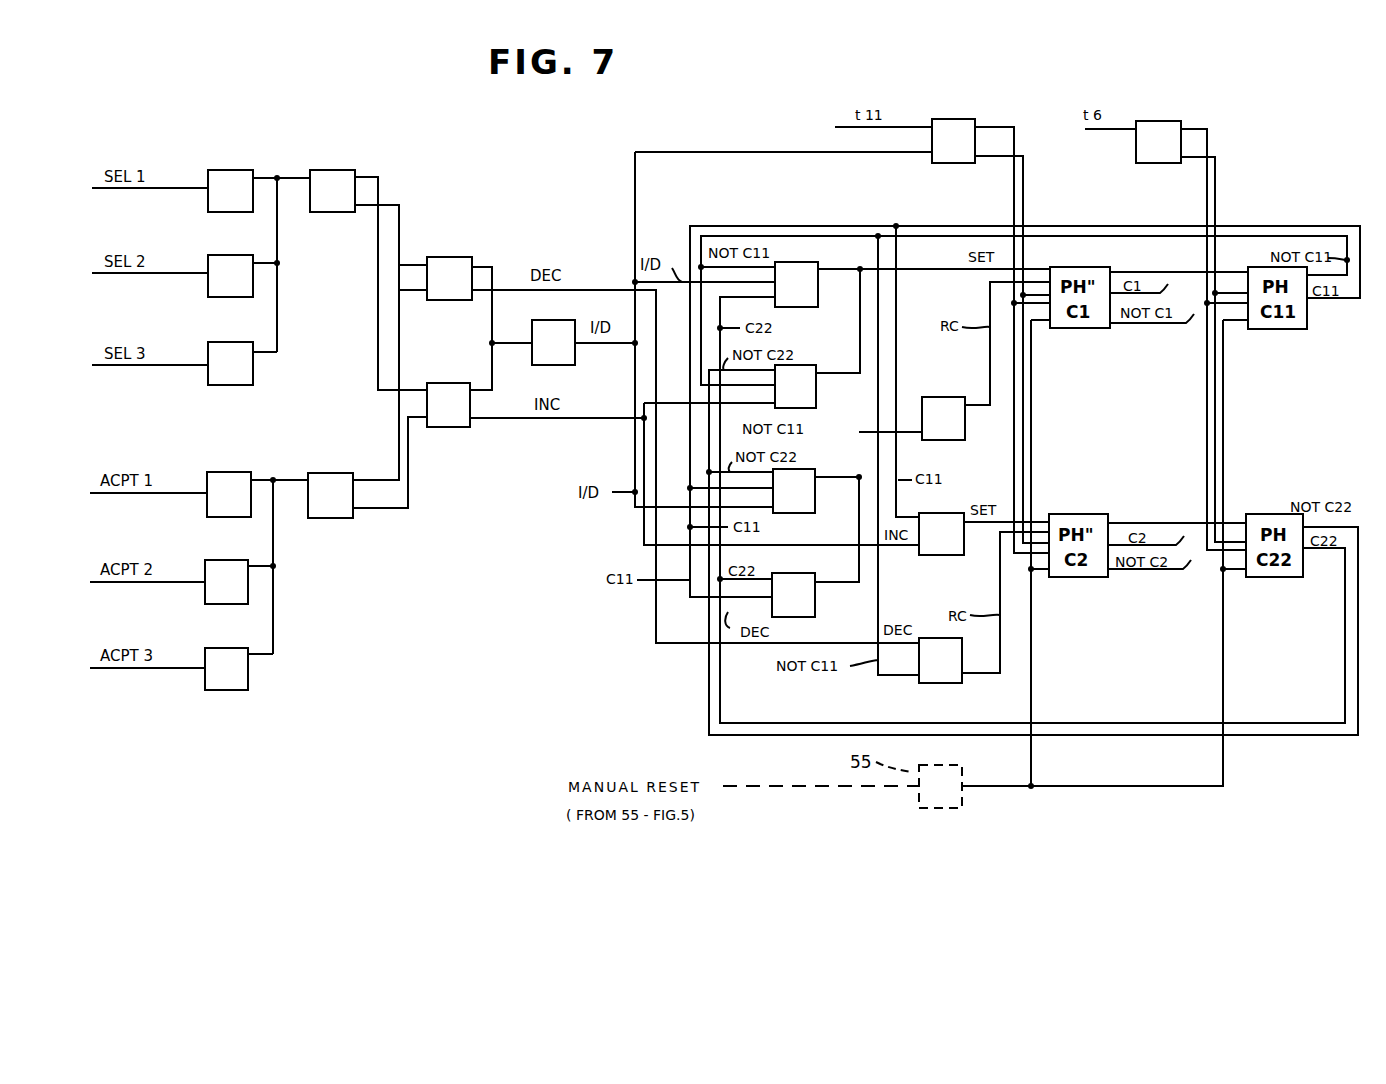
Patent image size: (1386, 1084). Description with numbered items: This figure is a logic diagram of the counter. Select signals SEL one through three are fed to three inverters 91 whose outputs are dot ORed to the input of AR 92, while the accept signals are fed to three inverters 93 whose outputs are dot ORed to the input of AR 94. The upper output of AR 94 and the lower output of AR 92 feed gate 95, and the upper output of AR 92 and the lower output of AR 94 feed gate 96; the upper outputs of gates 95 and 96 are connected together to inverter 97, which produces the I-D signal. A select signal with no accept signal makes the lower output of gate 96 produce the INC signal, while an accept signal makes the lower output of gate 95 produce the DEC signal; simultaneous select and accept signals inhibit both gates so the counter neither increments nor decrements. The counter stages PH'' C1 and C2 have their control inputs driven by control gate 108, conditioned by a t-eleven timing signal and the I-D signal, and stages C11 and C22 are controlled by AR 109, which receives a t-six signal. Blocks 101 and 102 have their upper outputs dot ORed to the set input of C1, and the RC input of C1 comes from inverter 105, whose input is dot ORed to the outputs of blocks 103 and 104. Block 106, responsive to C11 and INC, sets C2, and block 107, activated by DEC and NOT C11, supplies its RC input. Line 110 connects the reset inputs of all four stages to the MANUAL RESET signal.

The inverters 91 is at (232, 170).
The AR amplifier 92 is at (335, 170).
The inverters 93 is at (242, 472).
The AR amplifier 94 is at (336, 473).
The gate 95 is at (452, 257).
The gate 96 is at (452, 383).
The inverter 97 is at (558, 365).
The logic block 101 is at (805, 300).
The logic block 102 is at (816, 398).
The logic block 103 is at (800, 506).
The logic block 104 is at (815, 604).
The inverter 105 is at (946, 440).
The logic block 106 is at (928, 555).
The logic block 107 is at (935, 683).
The control gate 108 is at (958, 119).
The AR amplifier 109 is at (1147, 163).
The line 110 is at (978, 788).